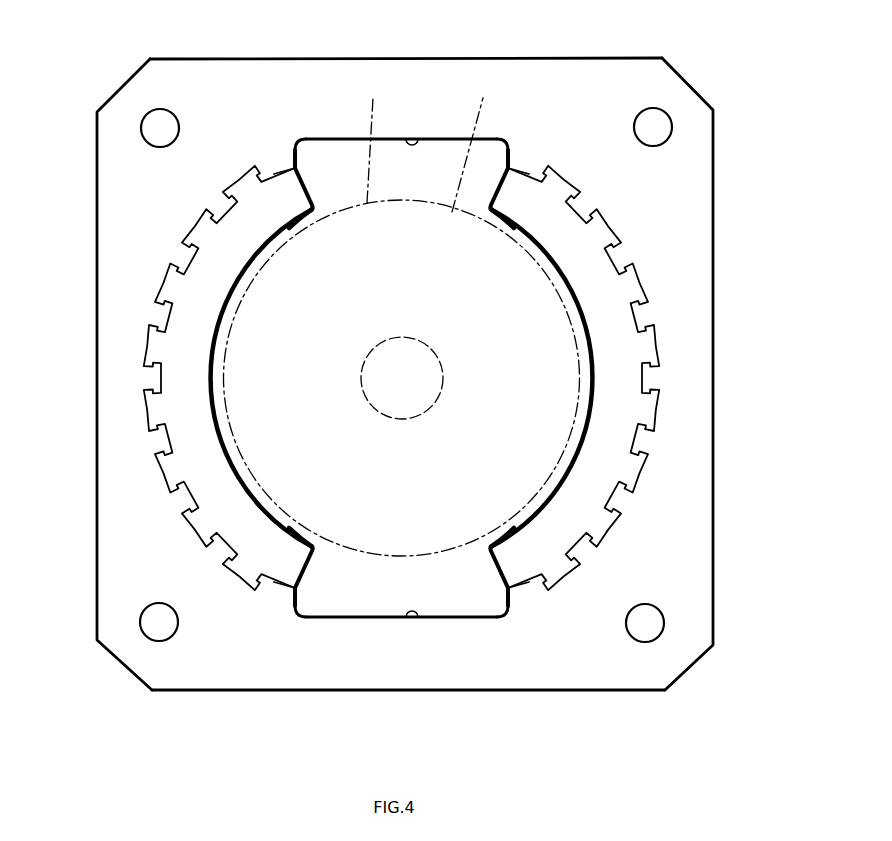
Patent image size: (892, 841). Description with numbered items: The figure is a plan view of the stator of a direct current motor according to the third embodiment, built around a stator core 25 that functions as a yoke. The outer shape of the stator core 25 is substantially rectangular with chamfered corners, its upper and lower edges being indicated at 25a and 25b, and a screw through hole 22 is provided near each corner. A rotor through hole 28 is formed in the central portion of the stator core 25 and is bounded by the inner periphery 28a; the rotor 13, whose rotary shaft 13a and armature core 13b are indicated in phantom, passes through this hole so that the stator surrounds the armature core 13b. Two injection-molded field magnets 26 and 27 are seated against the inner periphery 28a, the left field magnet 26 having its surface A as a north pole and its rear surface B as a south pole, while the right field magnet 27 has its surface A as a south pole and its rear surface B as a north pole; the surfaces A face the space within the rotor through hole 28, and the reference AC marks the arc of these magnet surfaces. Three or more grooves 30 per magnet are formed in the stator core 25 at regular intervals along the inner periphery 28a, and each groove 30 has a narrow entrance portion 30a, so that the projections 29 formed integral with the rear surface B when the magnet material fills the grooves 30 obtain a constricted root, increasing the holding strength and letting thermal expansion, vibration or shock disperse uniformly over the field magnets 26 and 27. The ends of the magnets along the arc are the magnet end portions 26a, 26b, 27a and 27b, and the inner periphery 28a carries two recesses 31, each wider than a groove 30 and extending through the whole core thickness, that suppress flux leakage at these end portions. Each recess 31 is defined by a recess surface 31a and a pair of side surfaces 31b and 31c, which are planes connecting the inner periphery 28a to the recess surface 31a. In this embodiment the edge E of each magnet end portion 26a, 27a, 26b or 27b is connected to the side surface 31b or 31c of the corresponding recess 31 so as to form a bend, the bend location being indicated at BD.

The stator core 25 is at (712, 488).
The upper edge of plate 25a is at (405, 57).
The lower edge of plate 25b is at (400, 692).
The screw through hole 22 is at (163, 118).
The recess 31 is at (447, 157).
The recess surface 31a is at (410, 138).
The side surface 31b is at (298, 137).
The side surface 31c is at (506, 137).
The edge of magnet end portion E is at (312, 172).
The field magnet 26 is at (190, 368).
The magnet end portion 26a is at (286, 207).
The magnet end portion 26b is at (244, 548).
The field magnet 27 is at (598, 386).
The magnet end portion 27a is at (512, 195).
The magnet end portion 27b is at (499, 548).
The surface A is at (218, 330).
The arc center line AC is at (305, 228).
The groove 30 is at (402, 348).
The entrance portion 30a is at (404, 348).
The projection 29 is at (376, 348).
The inner periphery 28a is at (638, 318).
The rotor through hole 28 is at (399, 312).
The rear surface B is at (165, 318).
The connecting edge BD is at (274, 172).
The rotor 13 is at (402, 314).
The rotary shaft 13a is at (402, 420).
The armature core 13b is at (372, 138).